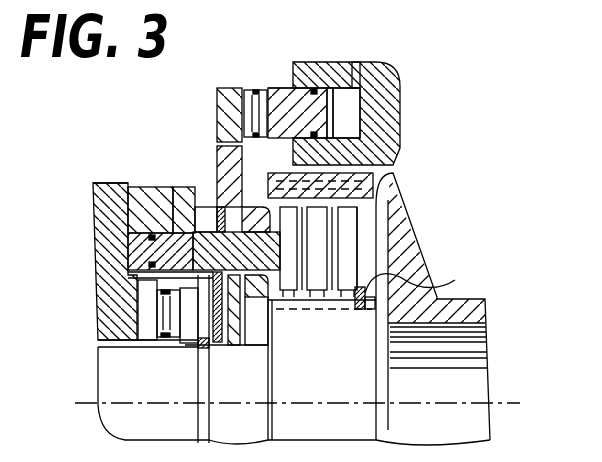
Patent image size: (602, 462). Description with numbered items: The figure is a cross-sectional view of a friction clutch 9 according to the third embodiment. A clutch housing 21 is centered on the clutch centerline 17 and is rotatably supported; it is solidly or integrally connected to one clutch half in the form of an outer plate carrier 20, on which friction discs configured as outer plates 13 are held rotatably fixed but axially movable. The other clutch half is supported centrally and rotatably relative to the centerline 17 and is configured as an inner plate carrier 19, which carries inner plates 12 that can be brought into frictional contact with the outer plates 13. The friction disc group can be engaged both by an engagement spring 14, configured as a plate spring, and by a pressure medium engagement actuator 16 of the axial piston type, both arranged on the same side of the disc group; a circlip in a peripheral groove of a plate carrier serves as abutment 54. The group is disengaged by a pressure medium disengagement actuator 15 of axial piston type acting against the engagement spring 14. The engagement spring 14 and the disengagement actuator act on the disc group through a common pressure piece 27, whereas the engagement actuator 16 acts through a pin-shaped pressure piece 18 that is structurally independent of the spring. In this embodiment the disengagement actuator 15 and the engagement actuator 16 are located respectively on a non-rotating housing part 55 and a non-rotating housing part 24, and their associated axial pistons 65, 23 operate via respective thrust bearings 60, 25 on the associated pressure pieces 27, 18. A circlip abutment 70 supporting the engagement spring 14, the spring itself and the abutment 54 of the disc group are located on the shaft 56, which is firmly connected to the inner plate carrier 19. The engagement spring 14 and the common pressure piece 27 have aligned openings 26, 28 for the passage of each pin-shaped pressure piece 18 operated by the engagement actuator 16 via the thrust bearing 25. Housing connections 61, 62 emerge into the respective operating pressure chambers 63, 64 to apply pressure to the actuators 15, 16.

The friction clutch 9 is at (416, 212).
The inner plates 12 is at (327, 290).
The outer plates 13 is at (345, 192).
The engagement spring 14 is at (212, 205).
The disengagement actuator 15 is at (288, 84).
The engagement actuator 16 is at (146, 200).
The clutch centerline 17 is at (93, 402).
The pressure piece 18 is at (207, 276).
The inner plate carrier 19 is at (354, 374).
The outer plate carrier 20 is at (335, 178).
The clutch housing 21 is at (415, 258).
The axial piston 23 is at (148, 251).
The non-rotating housing part 24 is at (117, 300).
The thrust bearing 25 is at (177, 187).
The opening 26 is at (253, 329).
The common pressure piece 27 is at (271, 302).
The opening 28 is at (222, 160).
The abutment 54 is at (423, 276).
The non-rotating housing part 55 is at (396, 86).
The shaft 56 is at (138, 394).
The thrust bearing 60 is at (246, 86).
The housing connection 61 is at (360, 63).
The housing connection 62 is at (127, 220).
The operating pressure chamber 63 is at (350, 113).
The operating pressure chamber 64 is at (97, 191).
The axial piston 65 is at (300, 88).
The circlip abutment 70 is at (209, 347).